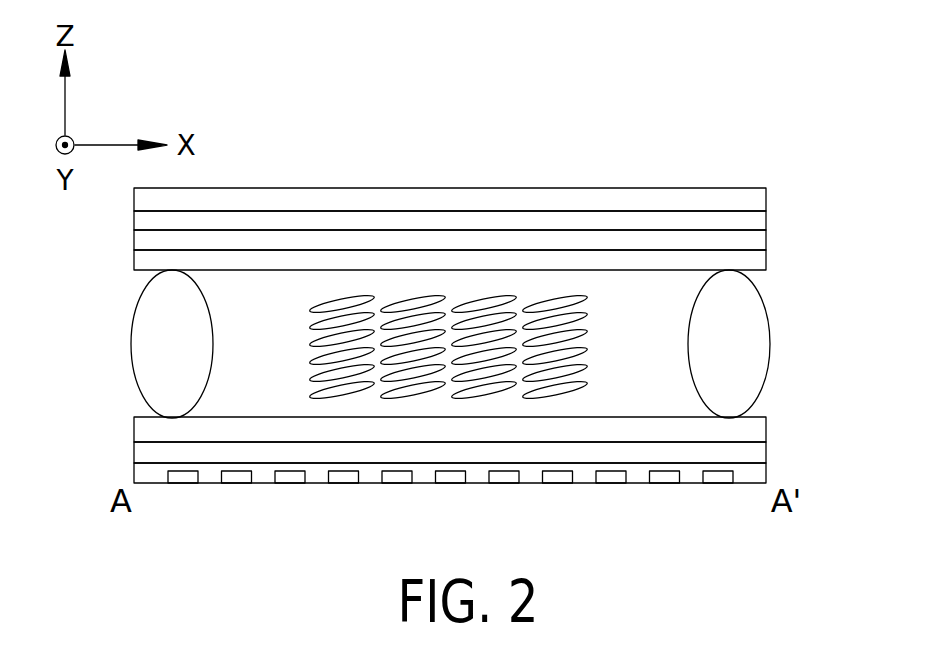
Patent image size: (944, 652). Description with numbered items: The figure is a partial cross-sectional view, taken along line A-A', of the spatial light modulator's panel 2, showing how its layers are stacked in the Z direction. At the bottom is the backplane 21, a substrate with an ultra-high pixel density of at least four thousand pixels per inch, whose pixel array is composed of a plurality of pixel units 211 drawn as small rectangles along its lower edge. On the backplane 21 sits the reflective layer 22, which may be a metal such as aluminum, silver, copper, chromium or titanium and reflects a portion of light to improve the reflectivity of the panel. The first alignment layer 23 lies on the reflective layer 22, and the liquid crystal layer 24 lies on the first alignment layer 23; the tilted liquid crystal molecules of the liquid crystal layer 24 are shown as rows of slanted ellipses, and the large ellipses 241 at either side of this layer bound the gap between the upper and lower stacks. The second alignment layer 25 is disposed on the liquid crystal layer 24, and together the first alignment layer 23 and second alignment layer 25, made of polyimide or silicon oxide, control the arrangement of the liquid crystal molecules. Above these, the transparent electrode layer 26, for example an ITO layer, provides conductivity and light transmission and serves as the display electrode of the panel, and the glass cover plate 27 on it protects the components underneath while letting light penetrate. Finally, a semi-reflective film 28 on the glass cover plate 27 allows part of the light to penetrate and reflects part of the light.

The display panel 2 is at (98, 303).
The backplane 21 is at (757, 470).
The pixel units 211 is at (663, 478).
The reflective layer 22 is at (757, 450).
The first alignment layer 23 is at (757, 430).
The liquid crystal layer 24 is at (636, 324).
The spacers 241 is at (757, 357).
The second alignment layer 25 is at (757, 262).
The transparent electrode layer 26 is at (757, 240).
The glass cover plate 27 is at (757, 220).
The semi-reflective film 28 is at (757, 200).